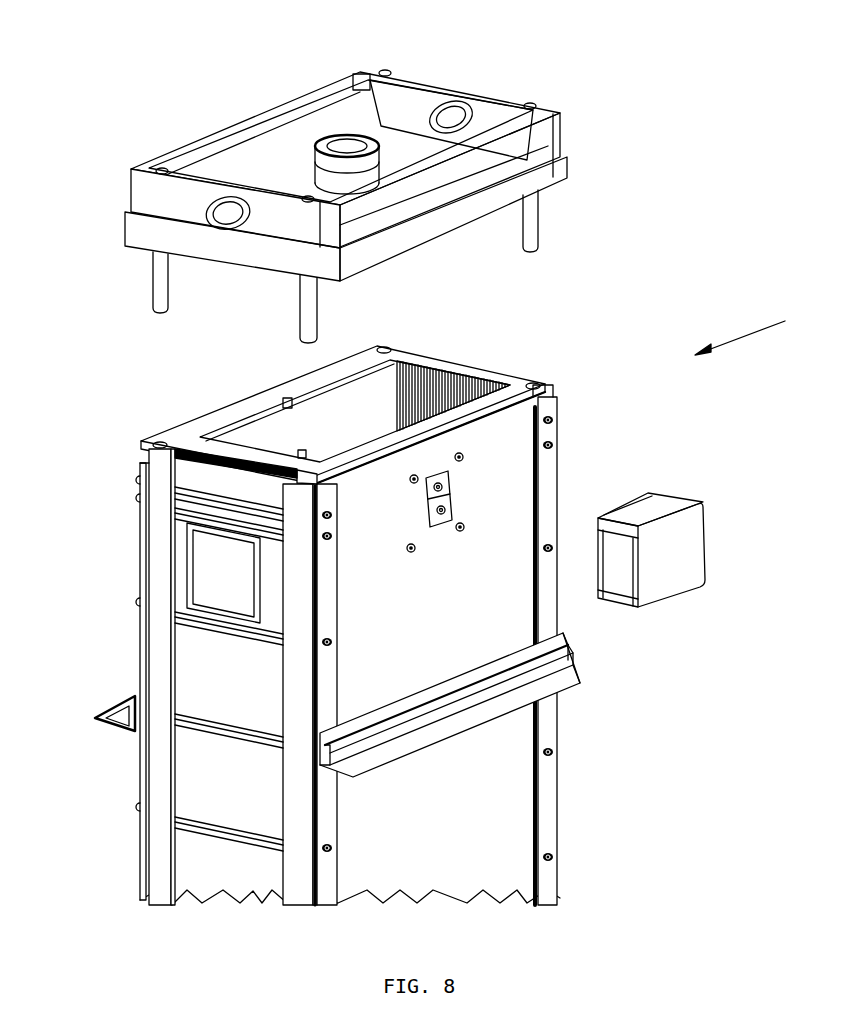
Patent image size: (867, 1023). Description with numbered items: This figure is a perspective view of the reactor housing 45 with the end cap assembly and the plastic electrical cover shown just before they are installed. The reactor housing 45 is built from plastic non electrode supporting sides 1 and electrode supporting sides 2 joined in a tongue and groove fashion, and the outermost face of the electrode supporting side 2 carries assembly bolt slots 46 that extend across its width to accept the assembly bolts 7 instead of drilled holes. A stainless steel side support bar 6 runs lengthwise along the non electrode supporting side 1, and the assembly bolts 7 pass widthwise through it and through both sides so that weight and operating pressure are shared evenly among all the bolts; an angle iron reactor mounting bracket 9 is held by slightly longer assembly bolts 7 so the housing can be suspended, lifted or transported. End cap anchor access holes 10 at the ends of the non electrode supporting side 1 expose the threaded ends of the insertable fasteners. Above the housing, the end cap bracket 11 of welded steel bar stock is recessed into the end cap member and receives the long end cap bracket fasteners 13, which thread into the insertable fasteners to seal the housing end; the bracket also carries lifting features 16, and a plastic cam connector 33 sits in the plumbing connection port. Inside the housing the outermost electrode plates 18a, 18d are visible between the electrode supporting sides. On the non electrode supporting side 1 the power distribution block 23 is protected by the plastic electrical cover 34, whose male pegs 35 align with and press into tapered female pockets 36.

The non electrode supporting side 1 is at (160, 551).
The electrode supporting side 2 is at (193, 657).
The side support bar 6 is at (540, 478).
The assembly bolts 7 is at (333, 642).
The reactor mounting brackets 9 is at (598, 672).
The end cap anchor access holes 10 is at (162, 444).
The end cap bracket 11 is at (250, 163).
The end cap bracket fasteners 13 is at (162, 170).
The lifting features 16 is at (455, 117).
The electrode plate 18a is at (288, 441).
The electrode plate 18d is at (480, 392).
The power distribution block 23 is at (435, 525).
The cam connector 33 is at (342, 147).
The electrical cover 34 is at (672, 547).
The male pegs 35 is at (600, 519).
The tapered female pockets 36 is at (462, 455).
The reactor housing 45 is at (755, 329).
The assembly bolt slots 46 is at (172, 488).